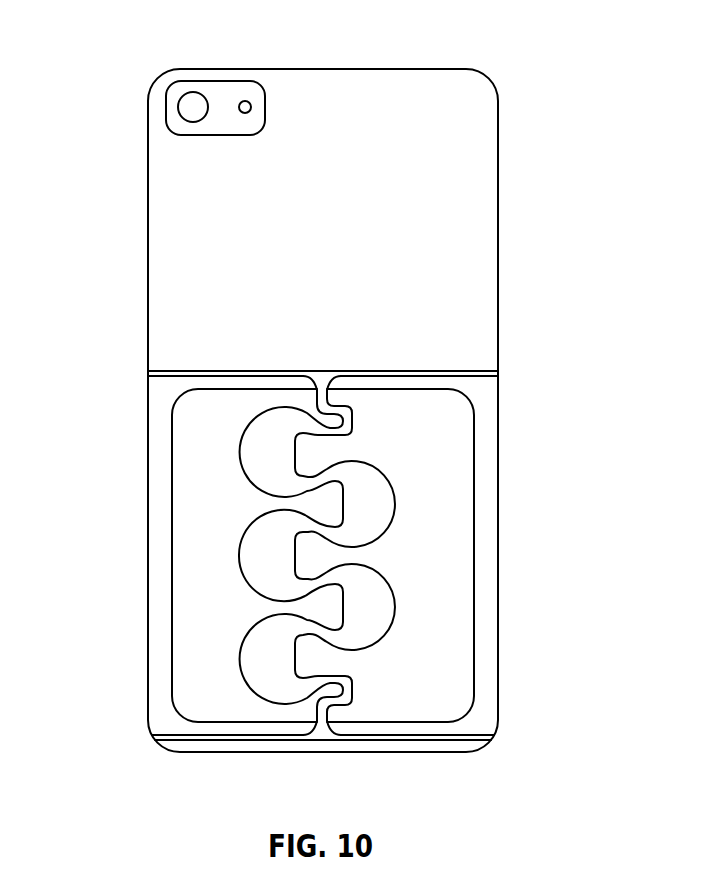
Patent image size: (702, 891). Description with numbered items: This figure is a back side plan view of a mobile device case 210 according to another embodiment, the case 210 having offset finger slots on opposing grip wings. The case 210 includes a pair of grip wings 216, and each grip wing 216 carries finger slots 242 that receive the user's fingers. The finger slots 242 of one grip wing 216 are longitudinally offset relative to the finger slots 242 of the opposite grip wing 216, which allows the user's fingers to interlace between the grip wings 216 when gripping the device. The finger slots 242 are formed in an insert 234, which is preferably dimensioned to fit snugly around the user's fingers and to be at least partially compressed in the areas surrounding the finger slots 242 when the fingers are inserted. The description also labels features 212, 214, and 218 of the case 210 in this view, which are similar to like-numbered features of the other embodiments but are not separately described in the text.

The case 210 is at (306, 387).
The camera opening 212 is at (229, 107).
The case body 214 is at (445, 69).
The grip wings 216 is at (256, 380).
The back wall 218 is at (477, 125).
The insert 234 is at (448, 591).
The finger slots 242 is at (395, 501).